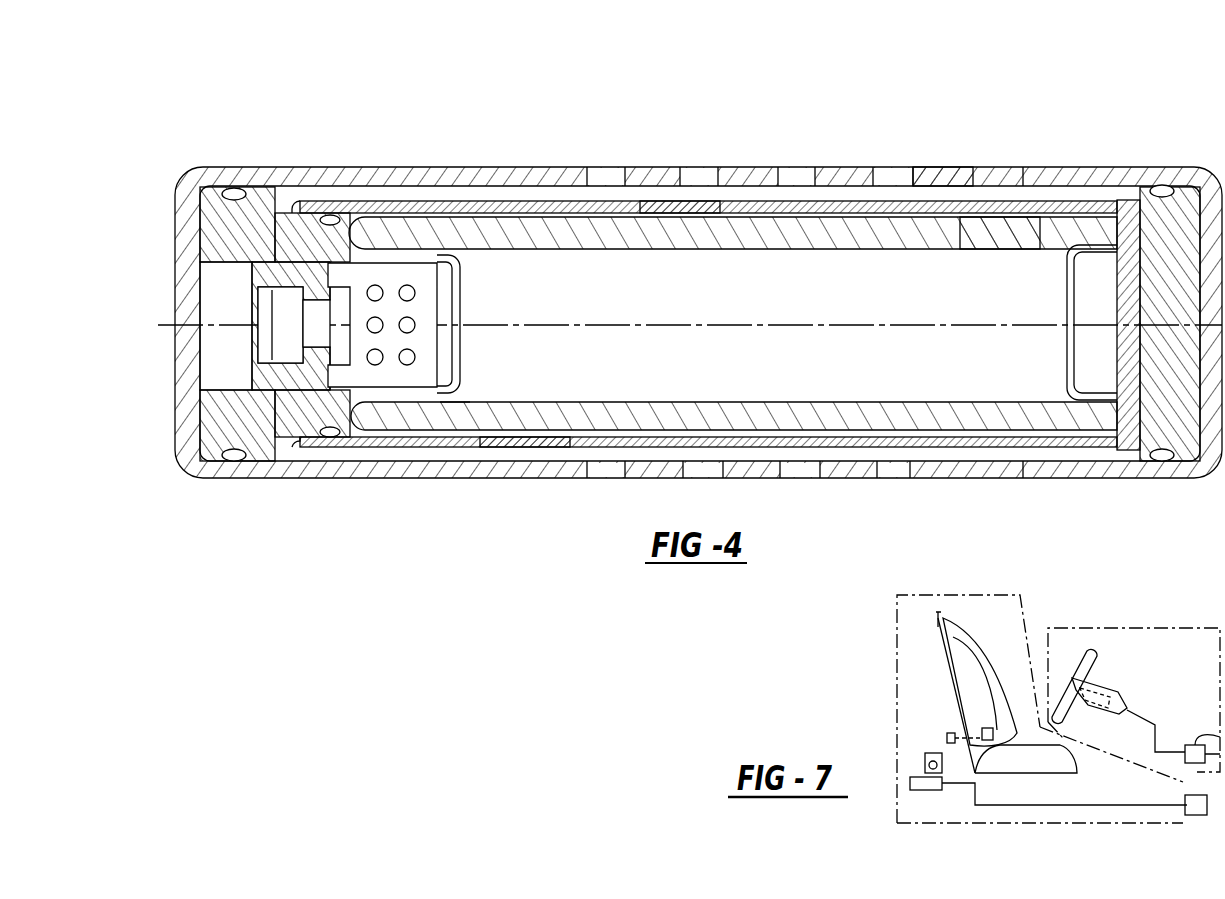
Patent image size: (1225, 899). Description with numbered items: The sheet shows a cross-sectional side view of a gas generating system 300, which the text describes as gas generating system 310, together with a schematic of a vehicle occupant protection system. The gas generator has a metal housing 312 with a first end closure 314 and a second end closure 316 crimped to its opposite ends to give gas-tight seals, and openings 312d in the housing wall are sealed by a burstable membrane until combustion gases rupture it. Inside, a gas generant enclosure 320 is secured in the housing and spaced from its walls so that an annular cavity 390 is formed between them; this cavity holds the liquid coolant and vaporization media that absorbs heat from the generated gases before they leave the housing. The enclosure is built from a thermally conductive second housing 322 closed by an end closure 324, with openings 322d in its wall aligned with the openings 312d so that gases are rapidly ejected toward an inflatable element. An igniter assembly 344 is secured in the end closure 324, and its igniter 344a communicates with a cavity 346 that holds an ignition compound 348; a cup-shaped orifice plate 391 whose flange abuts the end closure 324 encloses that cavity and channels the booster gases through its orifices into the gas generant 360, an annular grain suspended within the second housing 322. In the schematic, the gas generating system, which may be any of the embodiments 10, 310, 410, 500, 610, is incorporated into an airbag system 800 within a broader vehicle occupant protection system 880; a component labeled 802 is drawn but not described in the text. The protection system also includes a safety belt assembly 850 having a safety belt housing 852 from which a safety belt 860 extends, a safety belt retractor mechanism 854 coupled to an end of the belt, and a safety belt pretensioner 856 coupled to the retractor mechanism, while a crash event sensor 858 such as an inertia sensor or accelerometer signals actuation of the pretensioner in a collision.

In FIG. 4, the gas generator 300 is at (852, 456).
In FIG. 4, the housing 312 is at (423, 478).
In FIG. 4, the openings 312d is at (905, 178).
In FIG. 4, the first end closure 314 is at (247, 427).
In FIG. 4, the second end closure 316 is at (1185, 215).
In FIG. 4, the gas generant enclosure 320 is at (548, 450).
In FIG. 4, the second housing 322 is at (372, 443).
In FIG. 4, the openings 322d is at (700, 207).
In FIG. 4, the end closure 324 is at (315, 228).
In FIG. 4, the igniter assembly 344 is at (260, 338).
In FIG. 4, the igniter 344a is at (283, 310).
In FIG. 4, the cavity 346 is at (365, 275).
In FIG. 4, the ignition compound 348 is at (406, 290).
In FIG. 4, the gas generant 360 is at (1010, 232).
In FIG. 4, the annular cavity 390 is at (840, 215).
In FIG. 4, the orifice plate 391 is at (420, 403).
In FIG. 7, the airbag system 800 is at (1192, 628).
In FIG. 7, the steering wheel 802 is at (1092, 672).
In FIG. 7, the safety belt assembly 850 is at (958, 595).
In FIG. 7, the safety belt housing 852 is at (927, 772).
In FIG. 7, the safety belt retractor mechanism 854 is at (925, 753).
In FIG. 7, the safety belt pretensioner 856 is at (920, 790).
In FIG. 7, the crash event sensor 858 is at (1196, 815).
In FIG. 7, the safety belt 860 is at (960, 628).
In FIG. 7, the vehicle occupant protection system 880 is at (1107, 590).
In FIG. 7, the gas generating system 10 is at (1145, 675).
In FIG. 7, the gas generating system 310 is at (1145, 675).
In FIG. 7, the gas generating system 410 is at (1145, 675).
In FIG. 7, the gas generating system 500 is at (1145, 675).
In FIG. 7, the gas generating system 610 is at (1108, 690).